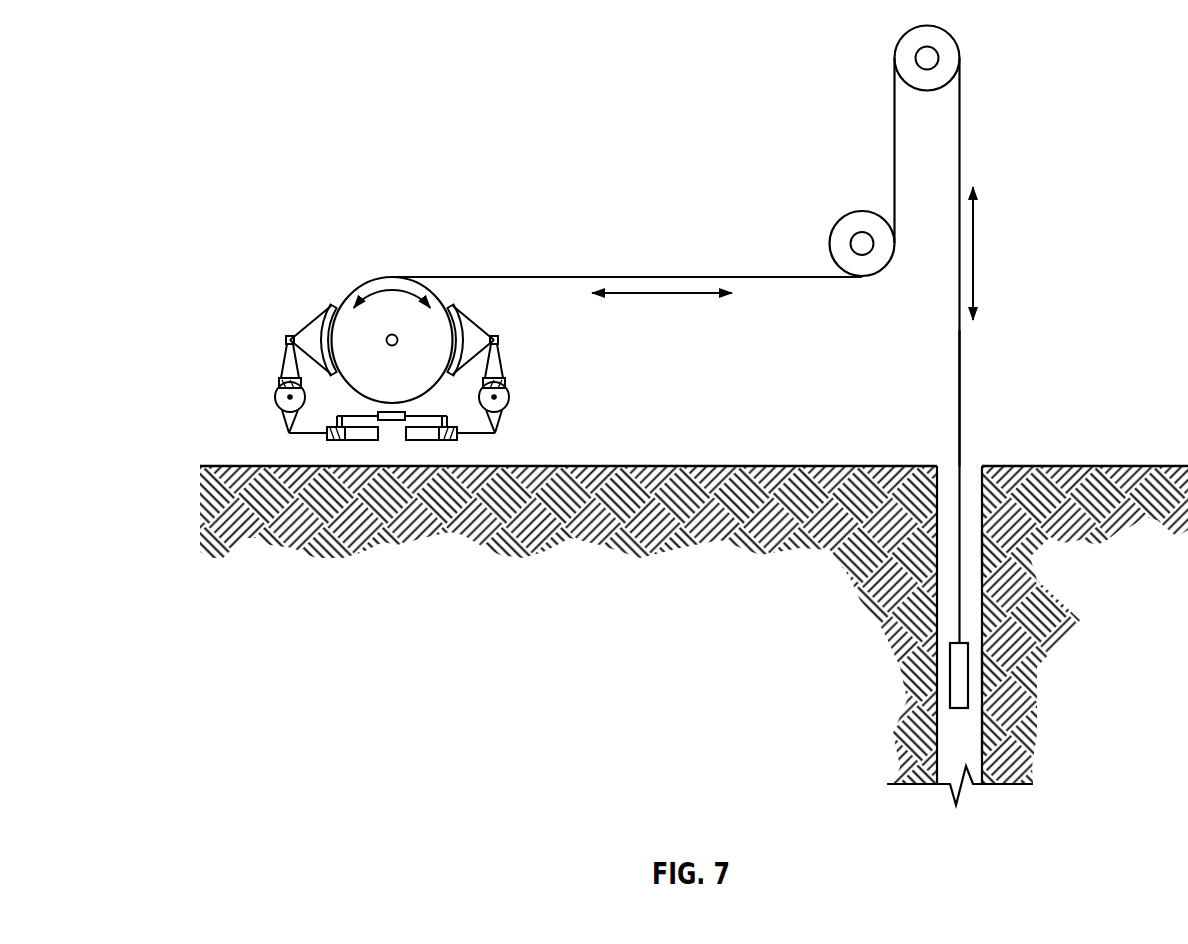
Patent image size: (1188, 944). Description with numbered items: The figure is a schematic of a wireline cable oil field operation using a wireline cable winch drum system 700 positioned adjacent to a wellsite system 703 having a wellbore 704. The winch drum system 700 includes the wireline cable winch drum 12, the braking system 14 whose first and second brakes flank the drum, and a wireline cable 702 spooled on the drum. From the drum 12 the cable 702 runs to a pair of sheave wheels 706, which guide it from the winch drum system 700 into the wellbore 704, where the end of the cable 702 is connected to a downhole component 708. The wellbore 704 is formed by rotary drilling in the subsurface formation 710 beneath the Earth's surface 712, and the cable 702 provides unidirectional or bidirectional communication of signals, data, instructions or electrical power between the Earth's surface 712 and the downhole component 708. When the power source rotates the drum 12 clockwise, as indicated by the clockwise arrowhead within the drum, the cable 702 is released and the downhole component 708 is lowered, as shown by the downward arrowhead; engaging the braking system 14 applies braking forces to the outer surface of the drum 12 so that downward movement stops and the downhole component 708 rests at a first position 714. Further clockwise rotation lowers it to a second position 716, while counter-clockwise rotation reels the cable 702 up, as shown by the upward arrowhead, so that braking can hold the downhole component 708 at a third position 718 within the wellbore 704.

The wireline cable winch drum system 700 is at (337, 80).
The wireline cable winch drum 12 is at (353, 283).
The braking system 14 is at (302, 319).
The wireline cable 702 is at (599, 277).
The sheave wheels 706 is at (961, 62).
The wellsite system 703 is at (989, 406).
The wellbore 704 is at (971, 466).
The downhole component 708 is at (950, 668).
The subsurface formation 710 is at (673, 647).
The Earth's surface 712 is at (1118, 466).
The first position 714 is at (986, 668).
The second position 716 is at (986, 728).
The third position 718 is at (986, 553).